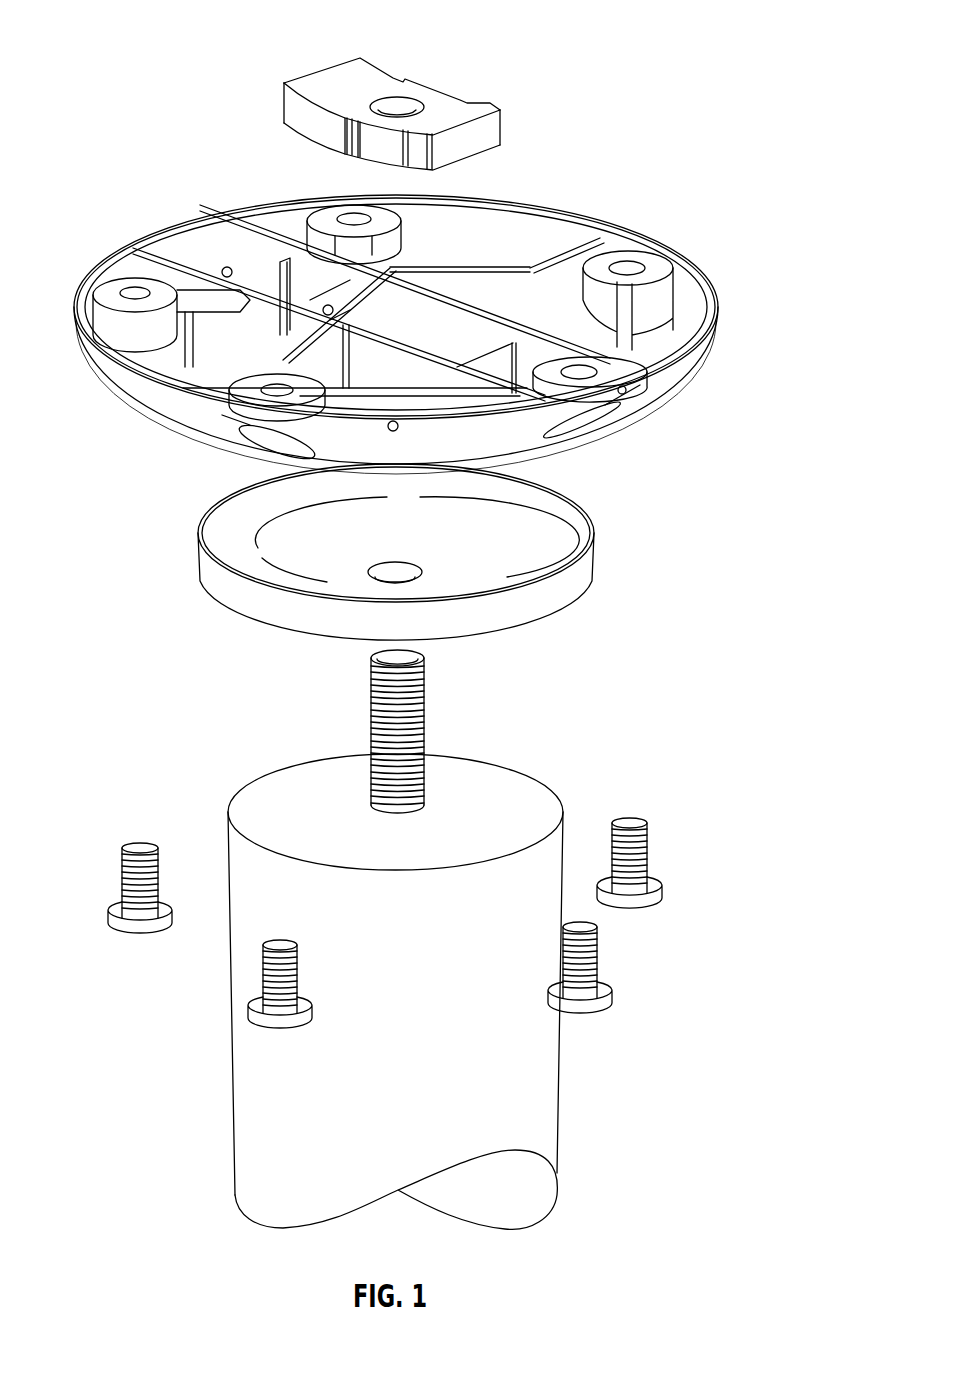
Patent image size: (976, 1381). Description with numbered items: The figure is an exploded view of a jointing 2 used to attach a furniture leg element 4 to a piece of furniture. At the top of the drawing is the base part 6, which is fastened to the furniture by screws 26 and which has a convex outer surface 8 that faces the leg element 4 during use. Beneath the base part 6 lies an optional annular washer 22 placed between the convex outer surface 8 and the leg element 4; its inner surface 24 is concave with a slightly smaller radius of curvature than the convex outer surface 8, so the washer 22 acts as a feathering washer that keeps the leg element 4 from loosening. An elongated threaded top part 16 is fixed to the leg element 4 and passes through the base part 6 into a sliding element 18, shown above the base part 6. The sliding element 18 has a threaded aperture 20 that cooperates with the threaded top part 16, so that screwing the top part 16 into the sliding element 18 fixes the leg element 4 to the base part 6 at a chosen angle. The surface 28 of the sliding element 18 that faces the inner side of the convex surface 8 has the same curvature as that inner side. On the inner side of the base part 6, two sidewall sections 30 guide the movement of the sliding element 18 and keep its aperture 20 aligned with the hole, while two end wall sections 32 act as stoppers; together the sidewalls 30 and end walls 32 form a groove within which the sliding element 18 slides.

The jointing 2 is at (64, 34).
The furniture leg element 4 is at (243, 1088).
The base part 6 is at (70, 208).
The convex outer surface 8 is at (158, 396).
The elongated threaded top part 16 is at (372, 705).
The sliding element 18 is at (381, 92).
The threaded aperture 20 is at (405, 102).
The annular washer 22 is at (386, 552).
The inner surface 24 is at (572, 518).
The screws 26 is at (122, 880).
The surface 28 is at (318, 148).
The sidewall sections 30 is at (470, 330).
The end wall sections 32 is at (273, 282).